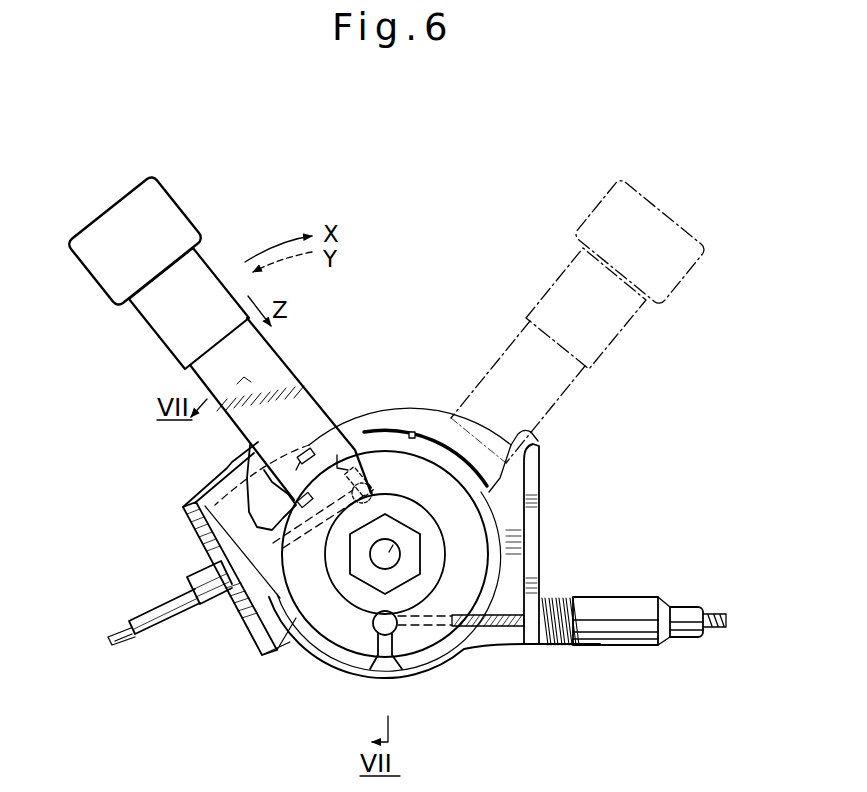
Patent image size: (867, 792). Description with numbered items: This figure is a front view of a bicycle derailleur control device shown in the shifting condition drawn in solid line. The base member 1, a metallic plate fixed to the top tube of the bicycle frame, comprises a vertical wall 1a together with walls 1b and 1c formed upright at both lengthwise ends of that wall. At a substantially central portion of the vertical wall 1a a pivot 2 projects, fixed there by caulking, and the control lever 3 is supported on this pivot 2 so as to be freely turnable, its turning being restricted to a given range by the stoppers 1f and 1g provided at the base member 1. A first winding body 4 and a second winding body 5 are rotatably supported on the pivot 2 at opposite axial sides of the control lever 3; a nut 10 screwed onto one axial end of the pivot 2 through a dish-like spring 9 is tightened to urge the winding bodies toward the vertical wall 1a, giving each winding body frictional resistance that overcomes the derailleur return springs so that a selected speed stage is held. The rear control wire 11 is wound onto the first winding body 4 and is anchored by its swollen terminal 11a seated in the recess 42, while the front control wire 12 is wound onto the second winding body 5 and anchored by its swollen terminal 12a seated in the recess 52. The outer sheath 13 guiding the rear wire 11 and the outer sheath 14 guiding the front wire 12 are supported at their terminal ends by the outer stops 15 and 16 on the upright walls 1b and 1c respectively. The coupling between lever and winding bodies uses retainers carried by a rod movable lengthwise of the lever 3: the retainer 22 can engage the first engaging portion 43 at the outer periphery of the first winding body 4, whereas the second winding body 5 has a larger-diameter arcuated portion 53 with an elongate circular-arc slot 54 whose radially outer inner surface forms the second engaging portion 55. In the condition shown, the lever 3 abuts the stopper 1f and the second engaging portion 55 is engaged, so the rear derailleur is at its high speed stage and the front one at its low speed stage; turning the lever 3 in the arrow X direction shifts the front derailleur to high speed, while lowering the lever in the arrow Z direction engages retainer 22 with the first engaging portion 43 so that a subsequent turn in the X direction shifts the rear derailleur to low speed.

The base member 1 is at (369, 532).
The vertical wall 1a is at (527, 580).
The upright wall 1b is at (541, 548).
The upright wall 1c is at (195, 518).
The stopper 1f is at (238, 470).
The stopper 1g is at (522, 444).
The pivot 2 is at (379, 564).
The control lever 3 is at (200, 387).
The first winding body 4 is at (472, 527).
The second winding body 5 is at (378, 408).
The dish-like spring 9 is at (332, 580).
The nut 10 is at (358, 579).
The control wire 11 is at (716, 628).
The swollen terminal 11a is at (394, 638).
The control wire 12 is at (117, 650).
The swollen terminal 12a is at (367, 480).
The outer sheath 13 is at (687, 640).
The outer sheath 14 is at (171, 627).
The outer stop 15 is at (612, 646).
The outer stop 16 is at (212, 607).
The retainer 22 is at (306, 452).
The recess 42 is at (378, 634).
The first engaging portion 43 is at (291, 500).
The recess 52 is at (378, 484).
The arcuated portion 53 is at (425, 423).
The elongate slot 54 is at (413, 434).
The second engaging portion 55 is at (298, 452).